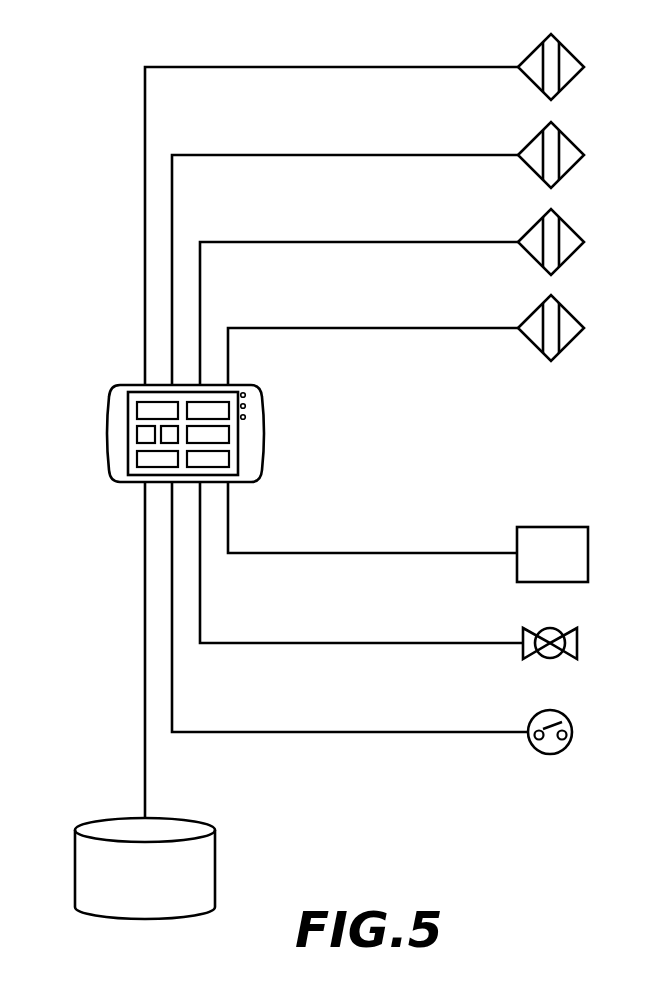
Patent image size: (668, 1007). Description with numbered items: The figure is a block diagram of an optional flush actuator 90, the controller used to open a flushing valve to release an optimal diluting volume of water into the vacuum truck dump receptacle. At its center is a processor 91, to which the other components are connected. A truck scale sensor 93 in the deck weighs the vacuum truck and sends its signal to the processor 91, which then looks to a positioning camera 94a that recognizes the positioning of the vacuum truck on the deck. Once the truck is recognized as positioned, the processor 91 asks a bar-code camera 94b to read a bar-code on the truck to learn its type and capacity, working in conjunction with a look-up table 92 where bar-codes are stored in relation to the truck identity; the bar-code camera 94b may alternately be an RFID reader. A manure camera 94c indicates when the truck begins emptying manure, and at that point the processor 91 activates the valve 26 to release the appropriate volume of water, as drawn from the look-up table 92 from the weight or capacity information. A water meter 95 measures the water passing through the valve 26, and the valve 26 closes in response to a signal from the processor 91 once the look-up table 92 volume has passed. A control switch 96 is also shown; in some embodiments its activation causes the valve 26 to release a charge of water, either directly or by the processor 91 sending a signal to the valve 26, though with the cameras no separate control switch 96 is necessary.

The flush actuator 90 is at (530, 826).
The processor 91 is at (117, 415).
The look-up table 92 is at (203, 870).
The truck scale sensor 93 is at (573, 62).
The positioning camera 94a is at (573, 150).
The bar-code camera 94b is at (573, 237).
The manure camera 94c is at (573, 323).
The water meter 95 is at (588, 553).
The valve 26 is at (578, 642).
The control switch 96 is at (553, 750).